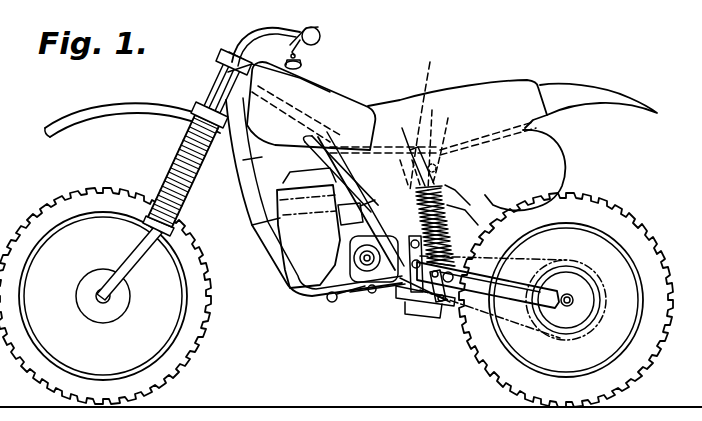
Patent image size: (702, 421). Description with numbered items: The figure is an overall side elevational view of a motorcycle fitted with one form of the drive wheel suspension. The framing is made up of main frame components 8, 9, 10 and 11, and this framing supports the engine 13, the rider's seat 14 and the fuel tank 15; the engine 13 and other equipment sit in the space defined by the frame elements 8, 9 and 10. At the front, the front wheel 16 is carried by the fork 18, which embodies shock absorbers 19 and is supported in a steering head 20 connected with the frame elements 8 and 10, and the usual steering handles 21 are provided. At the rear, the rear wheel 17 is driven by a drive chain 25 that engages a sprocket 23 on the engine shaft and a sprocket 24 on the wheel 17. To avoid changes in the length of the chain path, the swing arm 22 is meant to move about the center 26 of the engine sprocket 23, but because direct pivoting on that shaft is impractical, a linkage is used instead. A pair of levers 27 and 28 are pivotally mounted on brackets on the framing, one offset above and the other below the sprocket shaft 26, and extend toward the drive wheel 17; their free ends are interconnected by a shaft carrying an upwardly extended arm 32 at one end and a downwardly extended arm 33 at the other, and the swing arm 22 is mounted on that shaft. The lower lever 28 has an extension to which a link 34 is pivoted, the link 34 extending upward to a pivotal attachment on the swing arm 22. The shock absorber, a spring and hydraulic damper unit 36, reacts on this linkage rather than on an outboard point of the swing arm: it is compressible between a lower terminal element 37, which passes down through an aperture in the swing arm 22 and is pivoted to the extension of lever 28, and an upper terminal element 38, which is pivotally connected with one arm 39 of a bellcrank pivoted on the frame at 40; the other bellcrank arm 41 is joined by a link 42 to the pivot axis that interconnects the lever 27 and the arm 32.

The main frame component 8 is at (262, 240).
The main frame component 9 is at (312, 298).
The main frame component 10 is at (345, 160).
The main frame component 11 is at (420, 124).
The engine 13 is at (288, 190).
The rider's seat 14 is at (470, 97).
The fuel tank 15 is at (325, 97).
The front wheel 16 is at (45, 200).
The rear wheel 17 is at (648, 252).
The fork 18 is at (140, 237).
The shock absorbers 19 is at (176, 150).
The steering head 20 is at (212, 80).
The steering handles 21 is at (318, 30).
The swing arm 22 is at (550, 270).
The sprocket 23 is at (354, 259).
The sprocket 24 is at (552, 327).
The drive chain 25 is at (478, 322).
The center of the engine sprocket 26 is at (372, 296).
The lever 27 is at (340, 214).
The lever 28 is at (404, 300).
The upwardly extended arm 32 is at (446, 231).
The downwardly extended arm 33 is at (420, 306).
The link 34 is at (445, 312).
The spring and hydraulic damper unit 36 is at (465, 205).
The lower terminal element 37 is at (440, 318).
The upper terminal element 38 is at (448, 180).
The bellcrank arm 39 is at (438, 152).
The bellcrank pivot 40 is at (419, 148).
The bellcrank arm 41 is at (401, 170).
The link 42 is at (452, 190).